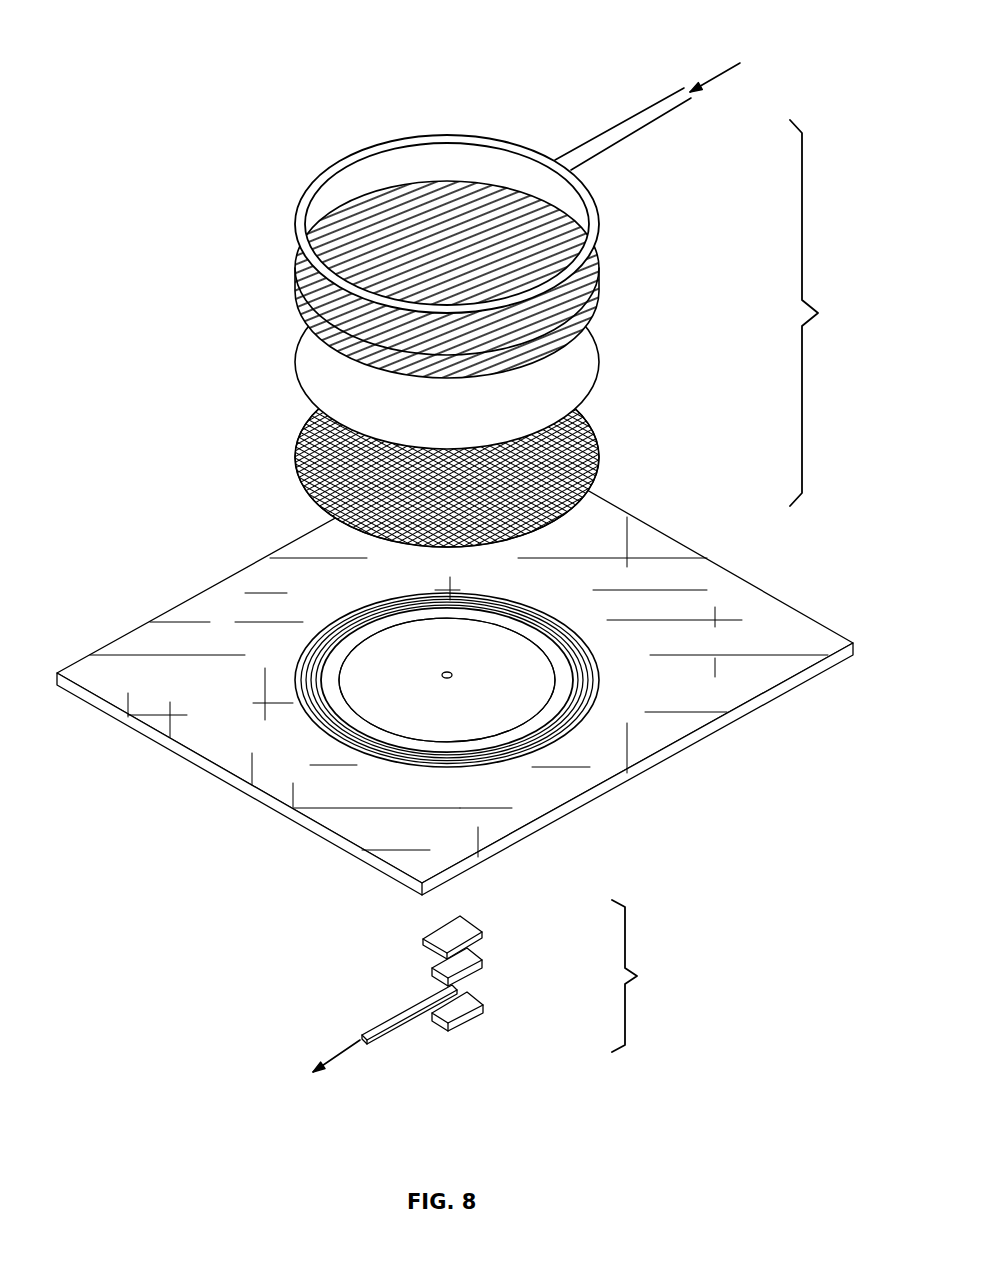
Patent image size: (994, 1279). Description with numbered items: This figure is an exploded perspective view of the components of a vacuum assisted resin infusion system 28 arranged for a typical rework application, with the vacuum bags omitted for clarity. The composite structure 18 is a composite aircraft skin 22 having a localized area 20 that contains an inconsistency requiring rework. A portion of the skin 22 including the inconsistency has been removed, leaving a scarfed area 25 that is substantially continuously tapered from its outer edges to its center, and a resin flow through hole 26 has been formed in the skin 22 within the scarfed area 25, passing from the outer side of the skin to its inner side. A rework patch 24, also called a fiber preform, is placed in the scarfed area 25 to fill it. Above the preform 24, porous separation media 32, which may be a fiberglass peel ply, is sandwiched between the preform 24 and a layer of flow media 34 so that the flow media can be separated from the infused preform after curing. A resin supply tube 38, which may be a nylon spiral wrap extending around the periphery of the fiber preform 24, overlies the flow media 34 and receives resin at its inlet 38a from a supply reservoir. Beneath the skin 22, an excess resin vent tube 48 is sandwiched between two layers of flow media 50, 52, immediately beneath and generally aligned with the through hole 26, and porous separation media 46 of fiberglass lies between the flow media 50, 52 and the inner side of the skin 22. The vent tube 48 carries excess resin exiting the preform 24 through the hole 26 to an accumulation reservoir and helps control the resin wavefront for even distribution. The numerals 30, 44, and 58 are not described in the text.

The composite structure 18 is at (132, 613).
The localized area 20 is at (303, 633).
The composite aircraft skin 22 is at (777, 627).
The rework patch 24 is at (297, 447).
The scarfed area 25 is at (407, 718).
The resin flow through hole 26 is at (465, 657).
The vacuum assisted resin infusion system 28 is at (819, 313).
The lower outlet assembly 30 is at (642, 976).
The porous separation media 32 is at (300, 312).
The flow media 34 is at (295, 262).
The resin supply tube 38 is at (350, 150).
The inlet 38a is at (647, 127).
The resin inlet 44 is at (727, 68).
The porous separation media 46 is at (473, 922).
The excess resin vent tube 48 is at (395, 1017).
The flow media 50 is at (480, 960).
The flow media 52 is at (482, 1005).
The resin outlet 58 is at (342, 1050).